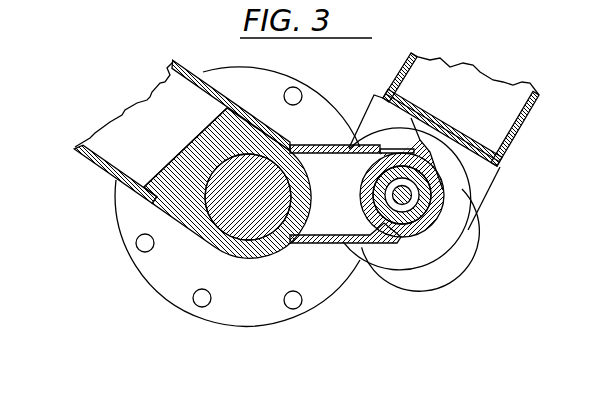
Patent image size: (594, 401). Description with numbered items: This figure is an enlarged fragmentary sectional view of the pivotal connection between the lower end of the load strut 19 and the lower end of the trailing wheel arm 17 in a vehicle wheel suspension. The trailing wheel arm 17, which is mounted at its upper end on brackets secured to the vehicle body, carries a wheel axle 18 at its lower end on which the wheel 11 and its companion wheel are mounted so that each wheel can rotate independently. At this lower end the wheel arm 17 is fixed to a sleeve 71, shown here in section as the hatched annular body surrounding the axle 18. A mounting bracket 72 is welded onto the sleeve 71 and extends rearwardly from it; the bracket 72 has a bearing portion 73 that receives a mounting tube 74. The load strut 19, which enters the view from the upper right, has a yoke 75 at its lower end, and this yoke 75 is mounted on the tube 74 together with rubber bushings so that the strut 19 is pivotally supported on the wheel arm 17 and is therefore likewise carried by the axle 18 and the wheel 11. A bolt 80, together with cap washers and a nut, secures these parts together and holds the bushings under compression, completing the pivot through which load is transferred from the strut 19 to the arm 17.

The wheel 11 is at (248, 197).
The trailing wheel arm 17 is at (182, 131).
The wheel axle 18 is at (227, 195).
The load strut 19 is at (461, 106).
The sleeve 71 is at (237, 196).
The mounting bracket 72 is at (333, 243).
The bearing portion 73 is at (430, 226).
The mounting tube 74 is at (424, 200).
The yoke 75 is at (460, 193).
The bolt 80 is at (390, 200).